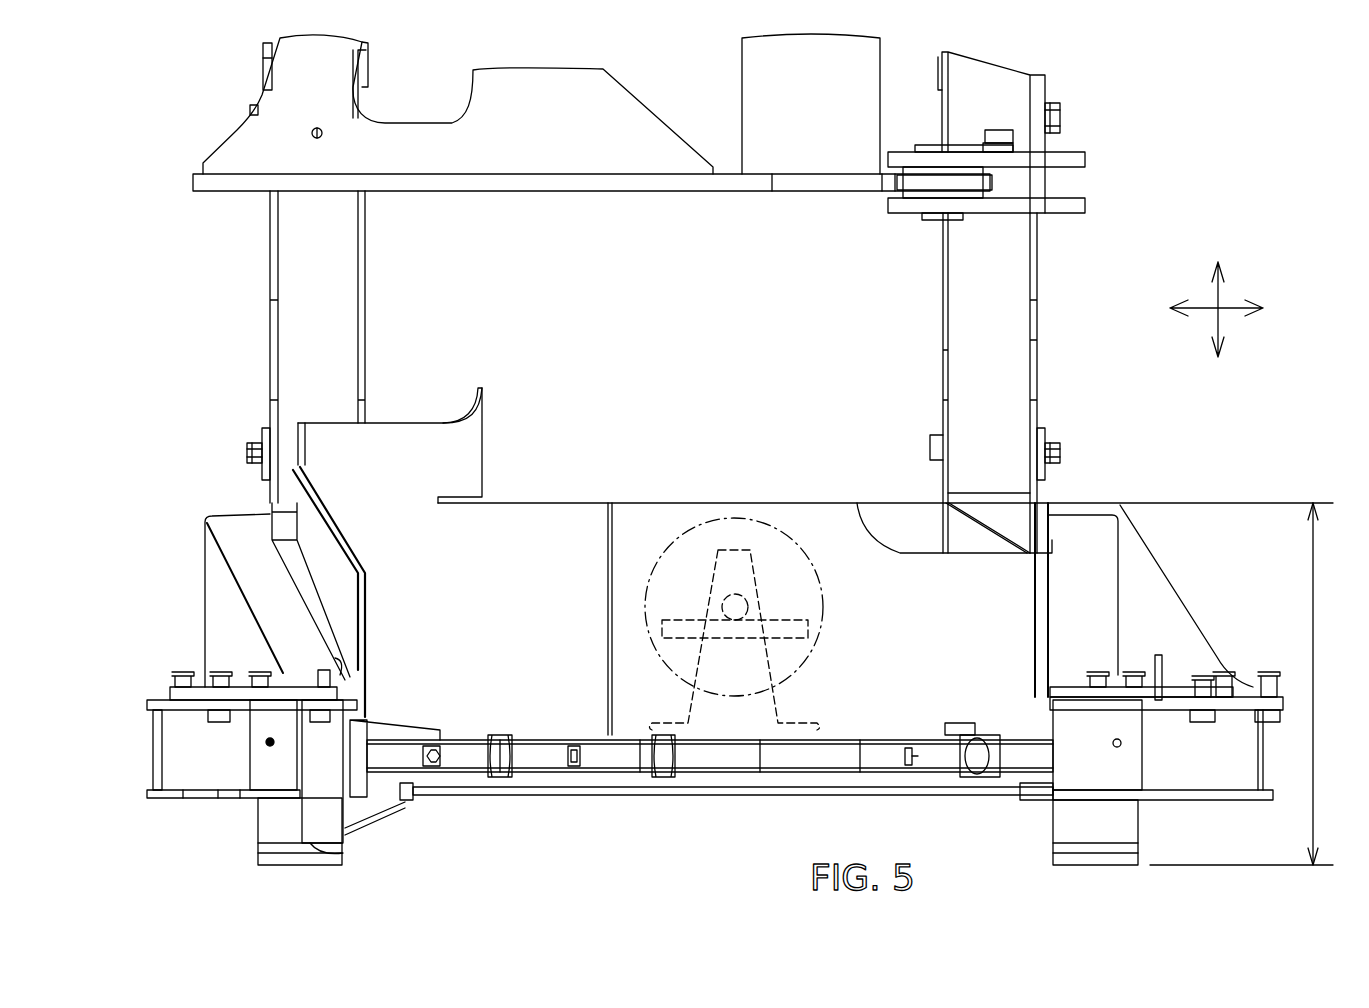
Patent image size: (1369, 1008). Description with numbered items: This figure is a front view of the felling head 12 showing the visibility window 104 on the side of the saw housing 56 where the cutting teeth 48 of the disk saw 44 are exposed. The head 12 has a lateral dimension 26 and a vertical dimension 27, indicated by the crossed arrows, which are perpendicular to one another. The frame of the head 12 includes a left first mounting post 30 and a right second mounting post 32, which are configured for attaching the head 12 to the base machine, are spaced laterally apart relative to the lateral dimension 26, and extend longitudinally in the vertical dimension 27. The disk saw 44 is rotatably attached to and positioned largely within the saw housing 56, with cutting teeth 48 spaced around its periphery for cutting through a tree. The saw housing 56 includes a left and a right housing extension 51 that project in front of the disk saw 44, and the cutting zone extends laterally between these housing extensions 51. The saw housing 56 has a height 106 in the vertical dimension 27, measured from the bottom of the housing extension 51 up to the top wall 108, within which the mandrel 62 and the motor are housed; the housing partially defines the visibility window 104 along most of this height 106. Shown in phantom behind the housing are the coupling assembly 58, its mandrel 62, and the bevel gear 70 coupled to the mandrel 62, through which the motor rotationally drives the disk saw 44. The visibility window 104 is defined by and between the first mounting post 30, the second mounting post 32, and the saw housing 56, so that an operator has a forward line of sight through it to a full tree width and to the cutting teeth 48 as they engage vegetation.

The head 12 is at (1178, 106).
The lateral dimension 26 is at (1232, 308).
The vertical dimension 27 is at (1220, 325).
The first mounting post 30 is at (308, 325).
The second mounting post 32 is at (990, 352).
The disk saw 44 is at (603, 755).
The cutting teeth 48 is at (665, 755).
The housing extension 51 is at (285, 825).
The saw housing 56 is at (222, 625).
The coupling assembly 58 is at (828, 588).
The mandrel 62 is at (780, 698).
The bevel gear 70 is at (810, 648).
The visibility window 104 is at (656, 333).
The height 106 is at (1241, 684).
The top wall 108 is at (687, 503).